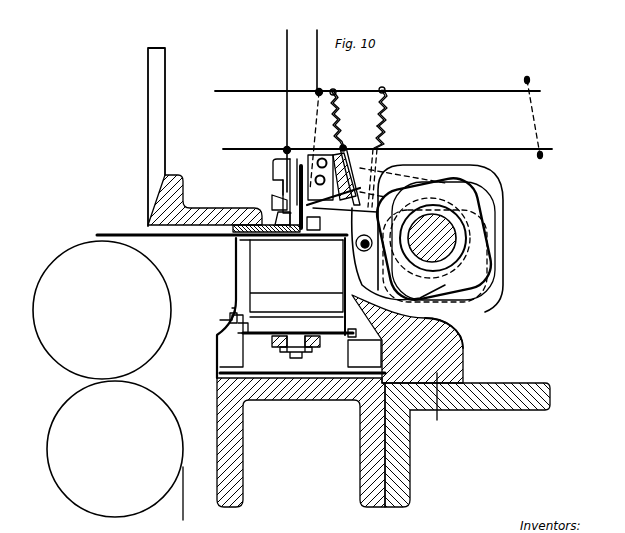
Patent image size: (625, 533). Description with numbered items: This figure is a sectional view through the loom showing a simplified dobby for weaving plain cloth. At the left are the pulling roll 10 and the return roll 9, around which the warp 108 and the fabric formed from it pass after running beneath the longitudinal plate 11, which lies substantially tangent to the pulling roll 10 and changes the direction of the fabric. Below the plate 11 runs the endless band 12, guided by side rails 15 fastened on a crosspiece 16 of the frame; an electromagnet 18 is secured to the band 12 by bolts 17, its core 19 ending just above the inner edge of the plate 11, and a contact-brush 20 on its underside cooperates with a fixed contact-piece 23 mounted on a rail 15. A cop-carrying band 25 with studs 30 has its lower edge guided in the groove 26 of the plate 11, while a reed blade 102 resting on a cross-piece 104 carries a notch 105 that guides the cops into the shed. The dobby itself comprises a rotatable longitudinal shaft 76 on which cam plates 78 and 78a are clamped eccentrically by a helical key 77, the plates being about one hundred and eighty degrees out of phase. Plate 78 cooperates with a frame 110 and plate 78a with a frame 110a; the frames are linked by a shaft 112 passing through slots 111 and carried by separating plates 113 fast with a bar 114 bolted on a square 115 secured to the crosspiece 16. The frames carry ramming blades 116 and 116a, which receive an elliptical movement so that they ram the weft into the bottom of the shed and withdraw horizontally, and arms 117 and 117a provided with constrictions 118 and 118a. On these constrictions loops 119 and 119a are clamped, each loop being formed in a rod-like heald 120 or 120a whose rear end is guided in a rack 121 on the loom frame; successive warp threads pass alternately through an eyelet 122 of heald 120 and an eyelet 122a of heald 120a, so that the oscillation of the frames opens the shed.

The return roll 9 is at (78, 403).
The pulling roll 10 is at (73, 262).
The longitudinal plate 11 is at (233, 233).
The endless band 12 is at (328, 337).
The side rails 15 is at (228, 358).
The crosspiece 16 is at (238, 488).
The bolts 17 is at (297, 357).
The electromagnet 18 is at (233, 295).
The core 19 is at (283, 238).
The contact-brush 20 is at (223, 322).
The fixed contact-piece 23 is at (220, 310).
The band 25 is at (287, 203).
The groove 26 is at (285, 217).
The studs 30 is at (283, 185).
The longitudinal shaft 76 is at (440, 253).
The helical key 77 is at (460, 240).
The cam plate 78 is at (467, 222).
The cam plate 78a is at (470, 257).
The blade 102 is at (275, 163).
The cross-piece 104 is at (360, 167).
The notch 105 is at (299, 165).
The warp 108 is at (316, 46).
The frame 110 is at (487, 190).
The frame 110a is at (493, 288).
The slot 111 is at (368, 231).
The shaft 112 is at (363, 252).
The separating plate 113 is at (460, 332).
The bar 114 is at (460, 368).
The square 115 is at (485, 412).
The ramming blade 116 is at (315, 240).
The ramming blade 116a is at (363, 187).
The arm 117 is at (343, 150).
The arm 117a is at (376, 118).
The constriction 118 is at (335, 103).
The constriction 118a is at (374, 140).
The loop 119 is at (324, 141).
The loop 119a is at (382, 88).
The heald 120 is at (475, 147).
The heald 120a is at (467, 91).
The rack 121 is at (527, 80).
The eyelet 122 is at (287, 150).
The eyelet 122a is at (319, 92).